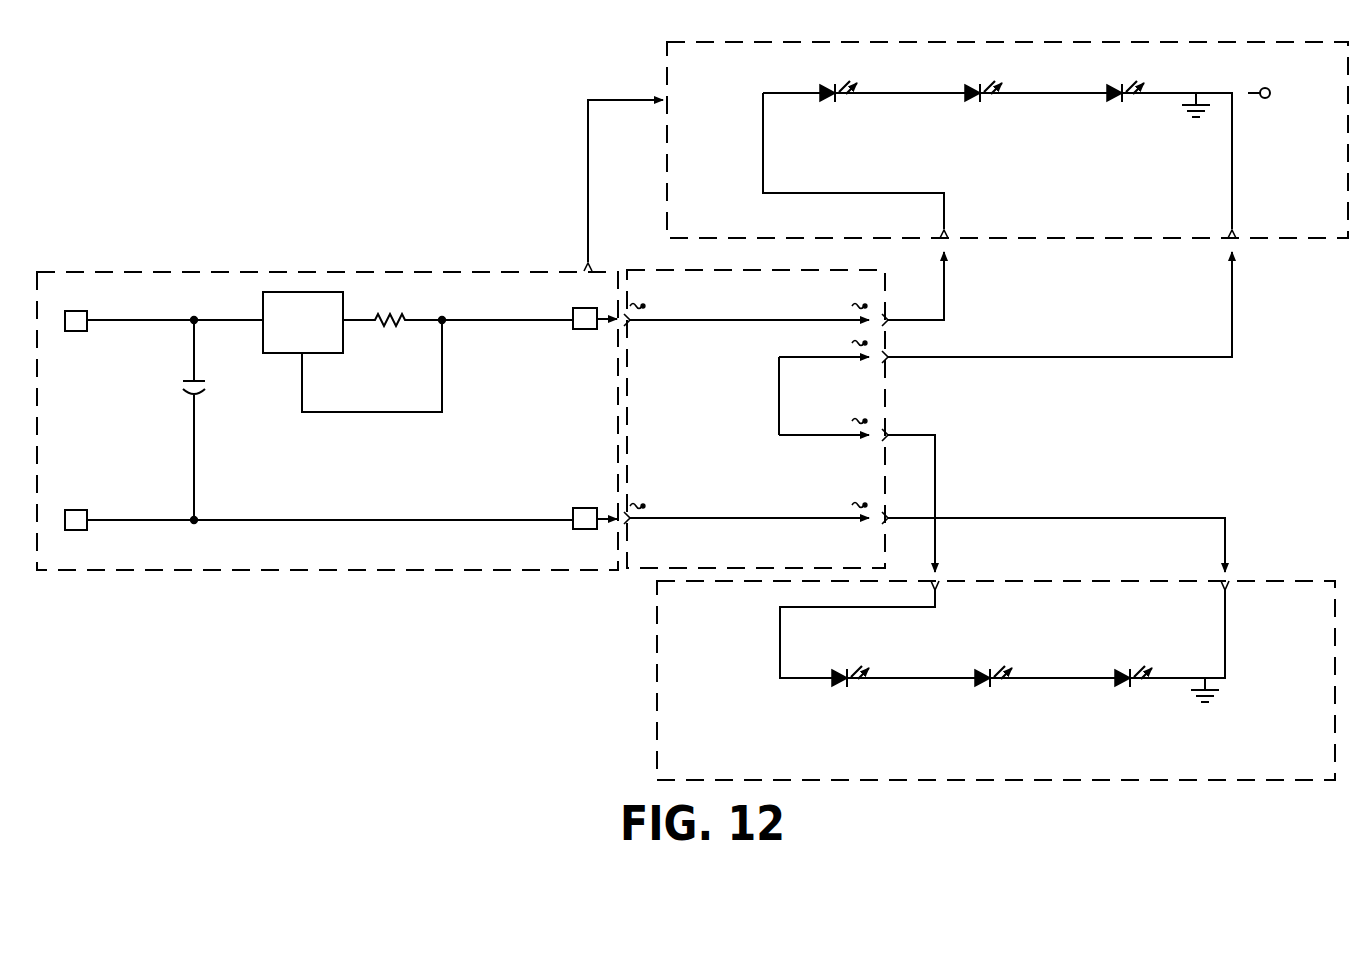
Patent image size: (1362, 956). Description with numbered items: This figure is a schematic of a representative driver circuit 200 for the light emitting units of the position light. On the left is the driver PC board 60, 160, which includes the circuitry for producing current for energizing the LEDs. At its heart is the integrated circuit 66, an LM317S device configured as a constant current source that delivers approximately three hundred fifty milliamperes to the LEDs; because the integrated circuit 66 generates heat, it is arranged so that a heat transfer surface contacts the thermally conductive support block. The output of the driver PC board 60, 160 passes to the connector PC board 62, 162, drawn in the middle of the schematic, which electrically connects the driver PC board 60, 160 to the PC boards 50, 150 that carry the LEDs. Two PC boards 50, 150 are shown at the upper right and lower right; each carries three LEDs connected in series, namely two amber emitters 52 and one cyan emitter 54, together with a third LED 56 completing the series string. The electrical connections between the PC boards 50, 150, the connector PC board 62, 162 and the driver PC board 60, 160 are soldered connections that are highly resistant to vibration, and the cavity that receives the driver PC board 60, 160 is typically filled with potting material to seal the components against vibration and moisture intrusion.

The lighting circuit 200 is at (392, 188).
The integrated circuit 66 is at (286, 308).
The PC board 50 is at (959, 409).
The PC board 150 is at (693, 92).
The amber emitter 52 is at (999, 125).
The cyan emitter 54 is at (999, 125).
The light emitting diode 56 is at (967, 78).
The driver PC board 60 is at (327, 435).
The driver PC board 160 is at (333, 547).
The connector PC board 62 is at (928, 412).
The connector PC board 162 is at (850, 406).